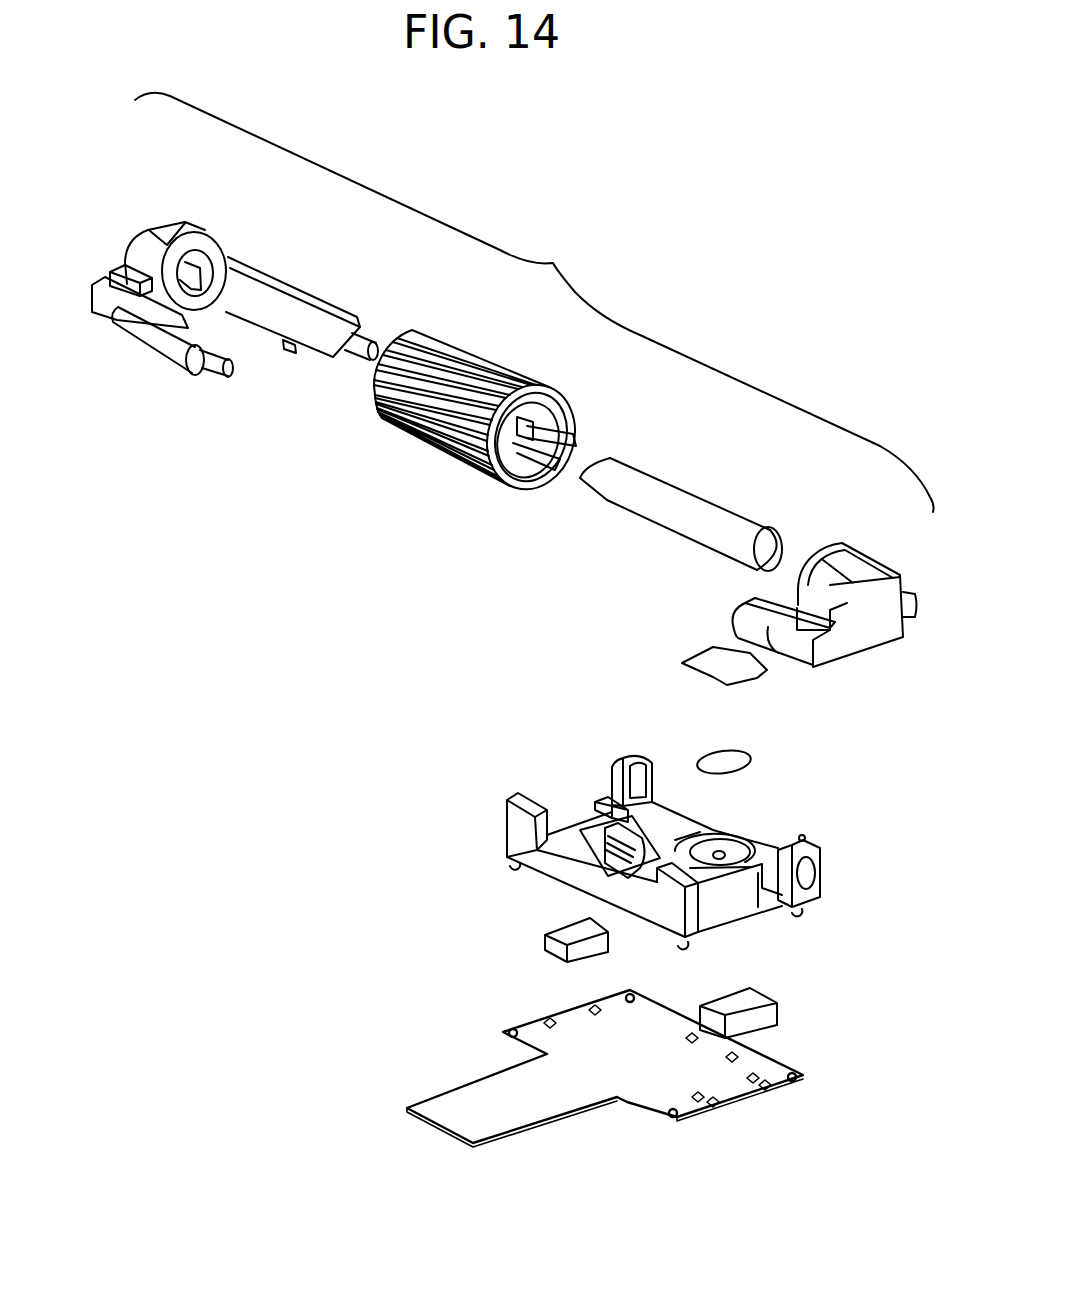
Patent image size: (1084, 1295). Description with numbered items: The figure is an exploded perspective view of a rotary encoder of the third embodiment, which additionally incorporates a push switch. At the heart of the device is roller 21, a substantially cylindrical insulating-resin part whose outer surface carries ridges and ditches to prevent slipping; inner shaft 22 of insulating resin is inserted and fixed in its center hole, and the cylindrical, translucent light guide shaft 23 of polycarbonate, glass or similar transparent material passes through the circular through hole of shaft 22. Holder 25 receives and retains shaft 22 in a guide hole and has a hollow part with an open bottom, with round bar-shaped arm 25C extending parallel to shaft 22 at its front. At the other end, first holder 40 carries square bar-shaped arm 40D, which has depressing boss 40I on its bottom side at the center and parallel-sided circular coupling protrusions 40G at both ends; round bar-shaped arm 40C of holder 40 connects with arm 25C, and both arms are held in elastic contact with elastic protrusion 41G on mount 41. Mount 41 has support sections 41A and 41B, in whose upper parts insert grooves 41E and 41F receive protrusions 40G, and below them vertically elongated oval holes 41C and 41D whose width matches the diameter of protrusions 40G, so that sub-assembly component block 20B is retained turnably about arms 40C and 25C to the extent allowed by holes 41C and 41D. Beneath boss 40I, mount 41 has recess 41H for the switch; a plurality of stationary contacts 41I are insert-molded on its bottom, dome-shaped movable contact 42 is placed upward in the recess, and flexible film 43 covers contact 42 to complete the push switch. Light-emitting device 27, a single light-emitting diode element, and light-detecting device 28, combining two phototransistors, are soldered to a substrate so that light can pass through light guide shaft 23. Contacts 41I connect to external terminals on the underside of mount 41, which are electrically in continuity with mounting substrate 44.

The sub-assembly component block 20B is at (534, 302).
The first holder 40 is at (168, 232).
The round bar-shaped arm 40C is at (158, 343).
The square bar-shaped arm 40D is at (272, 280).
The coupling protrusions 40G is at (366, 332).
The depressing boss 40I is at (287, 350).
The roller 21 is at (463, 380).
The inner shaft 22 is at (522, 418).
The light guide shaft 23 is at (675, 497).
The holder 25 is at (863, 563).
The arm 25C is at (765, 625).
The flexible film 43 is at (707, 657).
The movable contact 42 is at (713, 753).
The mount 41 is at (582, 878).
The support section 41A is at (610, 795).
The oval hole 41C is at (615, 792).
The insert groove 41E is at (637, 768).
The elastic protrusion 41G is at (607, 847).
The recess for switch 41H is at (740, 870).
The stationary contacts 41I is at (708, 852).
The oval hole 41D is at (812, 863).
The support section 41B is at (810, 877).
The insert groove 41F is at (808, 836).
The light-emitting device 27 is at (553, 943).
The light-detecting device 28 is at (770, 1015).
The mounting substrate 44 is at (580, 1077).